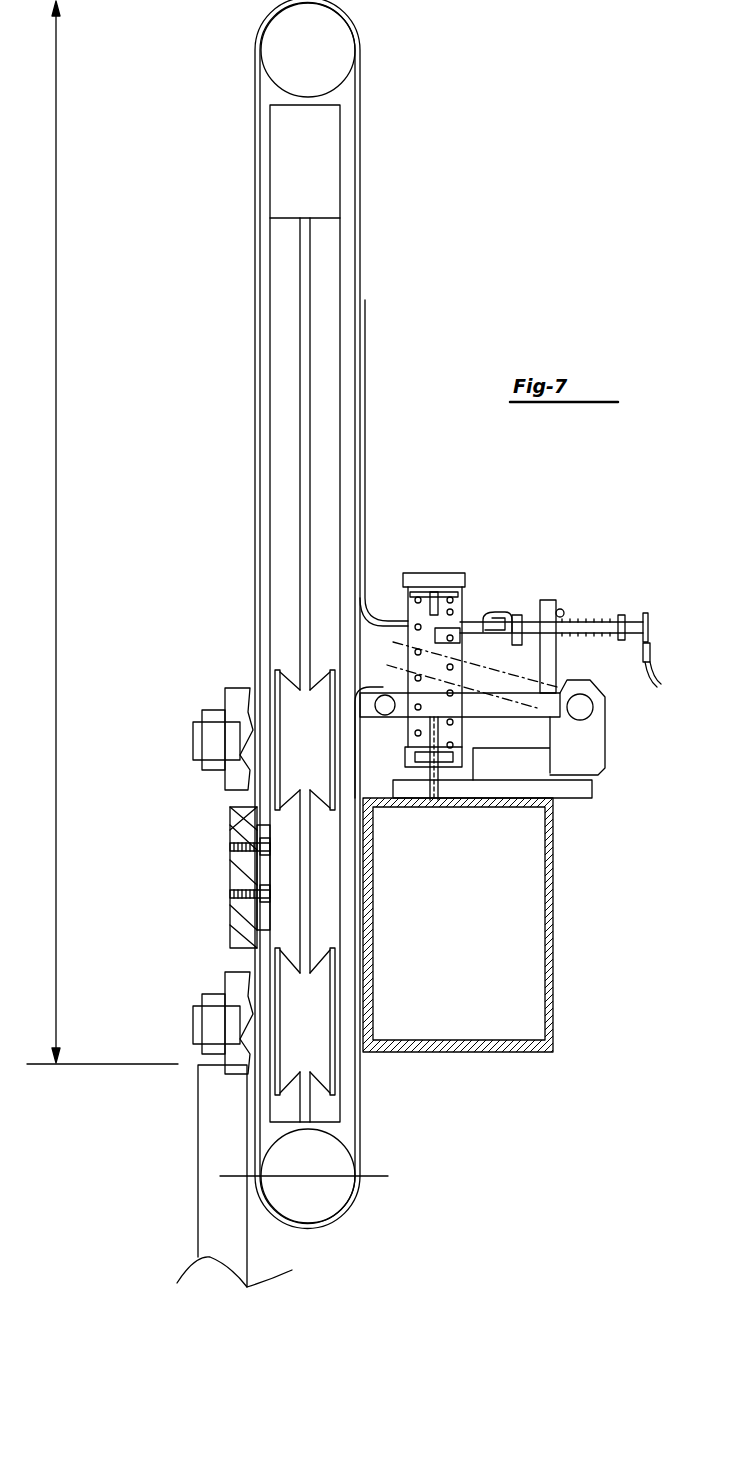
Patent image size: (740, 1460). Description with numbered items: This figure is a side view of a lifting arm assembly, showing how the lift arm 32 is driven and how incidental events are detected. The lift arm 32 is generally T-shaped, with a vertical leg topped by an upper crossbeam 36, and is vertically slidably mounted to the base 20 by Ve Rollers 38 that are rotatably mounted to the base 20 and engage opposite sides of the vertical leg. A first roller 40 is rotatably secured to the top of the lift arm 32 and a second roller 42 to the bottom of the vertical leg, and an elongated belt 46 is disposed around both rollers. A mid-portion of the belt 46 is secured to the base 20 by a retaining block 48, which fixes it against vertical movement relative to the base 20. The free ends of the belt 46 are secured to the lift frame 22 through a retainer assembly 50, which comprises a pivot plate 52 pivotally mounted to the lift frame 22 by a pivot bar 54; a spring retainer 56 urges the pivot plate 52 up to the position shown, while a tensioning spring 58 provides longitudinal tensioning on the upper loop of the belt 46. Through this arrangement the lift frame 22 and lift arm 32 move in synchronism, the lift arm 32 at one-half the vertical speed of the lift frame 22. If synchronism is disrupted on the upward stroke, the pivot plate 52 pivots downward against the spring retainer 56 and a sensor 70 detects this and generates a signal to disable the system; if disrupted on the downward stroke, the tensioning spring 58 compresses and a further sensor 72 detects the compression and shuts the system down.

The base 20 is at (228, 867).
The lift frame 22 is at (556, 915).
The lift arm 32 is at (345, 152).
The upper crossbeam 36 is at (280, 140).
The Ve Rollers 38 is at (288, 678).
The first roller 40 is at (320, 28).
The second roller 42 is at (330, 1193).
The belt 46 is at (362, 437).
The retaining block 48 is at (228, 947).
The retainer assembly 50 is at (556, 570).
The pivot plate 52 is at (533, 712).
The pivot bar 54 is at (585, 712).
The spring retainer 56 is at (418, 575).
The tensioning spring 58 is at (605, 617).
The sensor 70 is at (385, 715).
The further sensor 72 is at (653, 648).